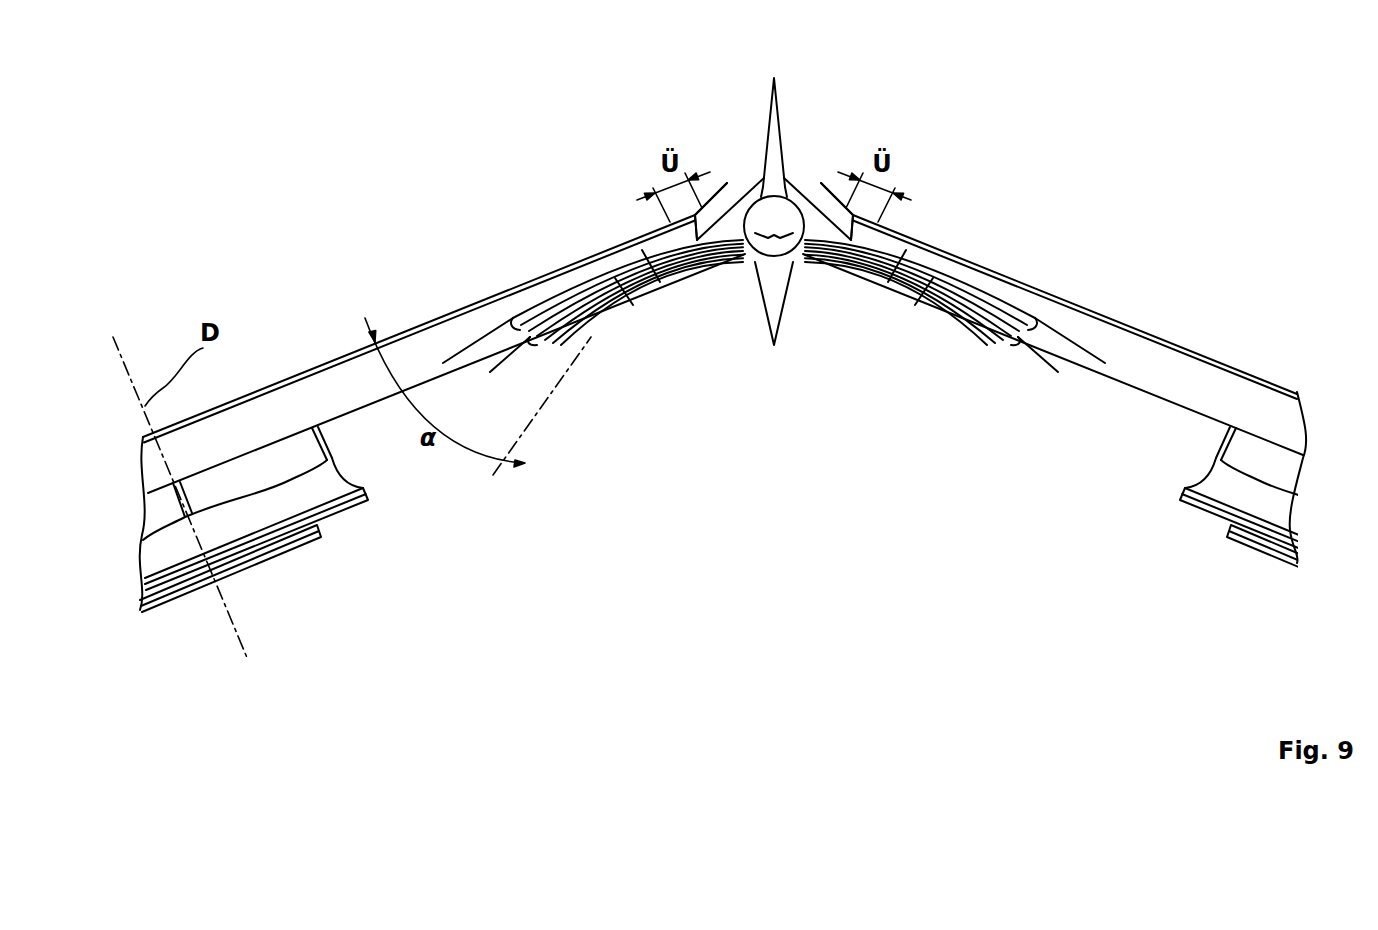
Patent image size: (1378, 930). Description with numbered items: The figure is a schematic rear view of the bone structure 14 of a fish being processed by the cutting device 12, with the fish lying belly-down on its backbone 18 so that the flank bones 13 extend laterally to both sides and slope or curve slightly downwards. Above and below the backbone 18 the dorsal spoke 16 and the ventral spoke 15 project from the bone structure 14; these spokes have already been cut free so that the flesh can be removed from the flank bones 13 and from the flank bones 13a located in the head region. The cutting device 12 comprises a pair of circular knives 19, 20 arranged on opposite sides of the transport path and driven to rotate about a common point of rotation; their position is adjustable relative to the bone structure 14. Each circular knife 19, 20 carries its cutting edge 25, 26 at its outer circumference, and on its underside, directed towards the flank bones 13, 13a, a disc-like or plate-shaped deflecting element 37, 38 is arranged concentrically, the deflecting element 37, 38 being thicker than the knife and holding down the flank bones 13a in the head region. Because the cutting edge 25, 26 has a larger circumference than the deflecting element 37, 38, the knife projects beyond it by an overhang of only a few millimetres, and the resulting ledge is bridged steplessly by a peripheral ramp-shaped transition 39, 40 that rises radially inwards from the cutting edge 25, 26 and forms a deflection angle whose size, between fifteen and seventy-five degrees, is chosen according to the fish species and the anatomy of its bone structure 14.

The cutting device 12 is at (1214, 282).
The flank bones 13 is at (636, 296).
The flank bones in the head region 13a is at (668, 281).
The bone structure 14 is at (804, 160).
The ventral spoke 15 is at (782, 300).
The dorsal spoke 16 is at (781, 120).
The backbone 18 is at (740, 197).
The circular knife 19 is at (1140, 313).
The circular knife 20 is at (463, 303).
The cutting edge 25 is at (850, 174).
The cutting edge 26 is at (727, 183).
The deflecting element 37 is at (1135, 372).
The deflecting element 38 is at (367, 387).
The ramp-shaped transition 39 is at (891, 232).
The ramp-shaped transition 40 is at (657, 232).